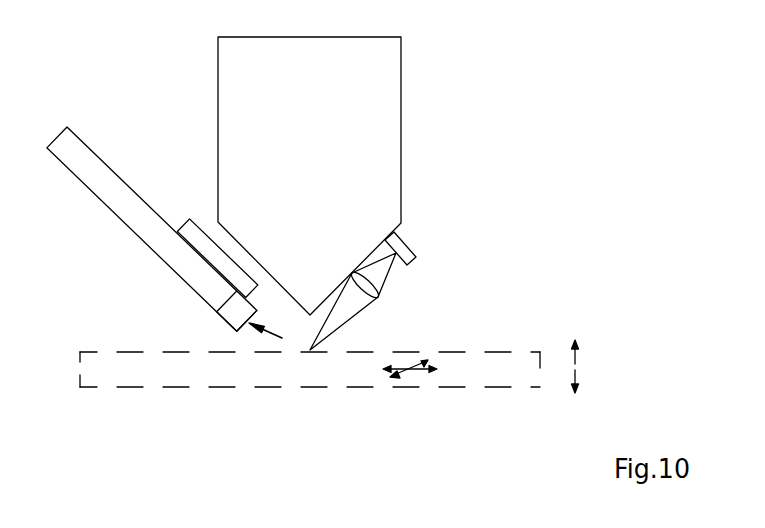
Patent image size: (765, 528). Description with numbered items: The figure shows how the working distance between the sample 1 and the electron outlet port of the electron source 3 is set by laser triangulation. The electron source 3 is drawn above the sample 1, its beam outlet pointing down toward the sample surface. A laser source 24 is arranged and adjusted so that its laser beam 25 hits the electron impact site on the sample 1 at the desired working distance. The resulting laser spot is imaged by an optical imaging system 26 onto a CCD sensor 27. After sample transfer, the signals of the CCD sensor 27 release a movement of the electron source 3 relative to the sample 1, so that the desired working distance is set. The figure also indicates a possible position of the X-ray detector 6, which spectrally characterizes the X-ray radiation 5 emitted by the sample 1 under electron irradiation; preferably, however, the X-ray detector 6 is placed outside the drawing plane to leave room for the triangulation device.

The sample 1 is at (178, 377).
The electron source 3 is at (396, 129).
The X-ray radiation 5 is at (282, 338).
The X-ray detector 6 is at (132, 222).
The laser source 24 is at (187, 224).
The laser beam 25 is at (250, 303).
The optical imaging system 26 is at (378, 297).
The CCD sensor 27 is at (410, 252).